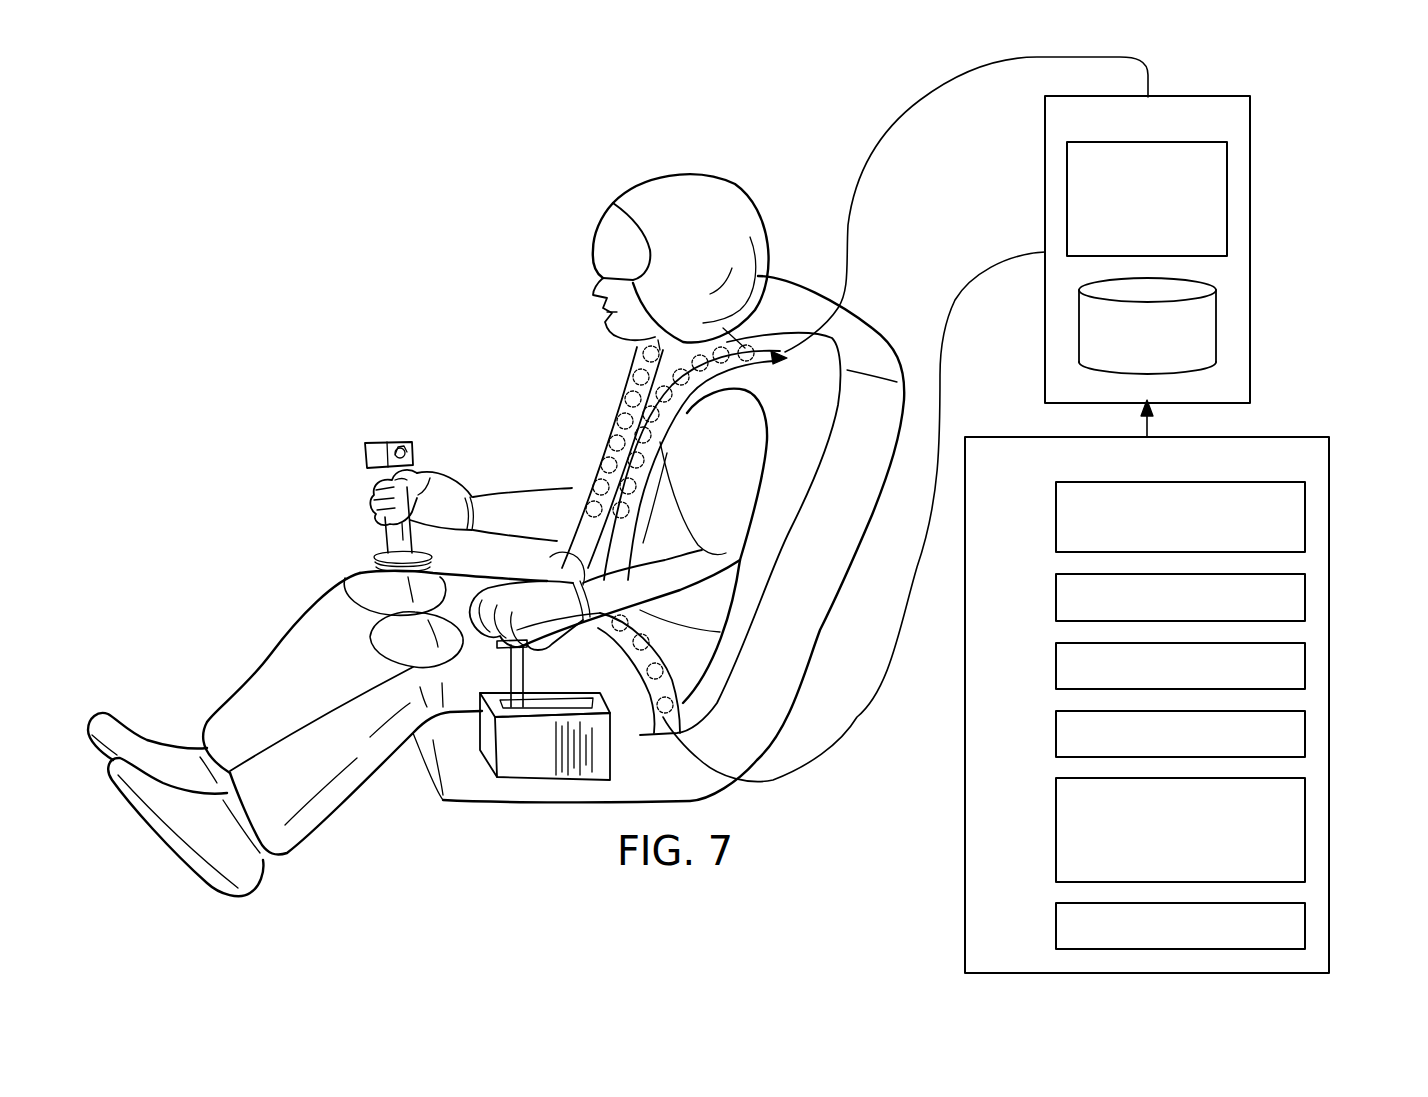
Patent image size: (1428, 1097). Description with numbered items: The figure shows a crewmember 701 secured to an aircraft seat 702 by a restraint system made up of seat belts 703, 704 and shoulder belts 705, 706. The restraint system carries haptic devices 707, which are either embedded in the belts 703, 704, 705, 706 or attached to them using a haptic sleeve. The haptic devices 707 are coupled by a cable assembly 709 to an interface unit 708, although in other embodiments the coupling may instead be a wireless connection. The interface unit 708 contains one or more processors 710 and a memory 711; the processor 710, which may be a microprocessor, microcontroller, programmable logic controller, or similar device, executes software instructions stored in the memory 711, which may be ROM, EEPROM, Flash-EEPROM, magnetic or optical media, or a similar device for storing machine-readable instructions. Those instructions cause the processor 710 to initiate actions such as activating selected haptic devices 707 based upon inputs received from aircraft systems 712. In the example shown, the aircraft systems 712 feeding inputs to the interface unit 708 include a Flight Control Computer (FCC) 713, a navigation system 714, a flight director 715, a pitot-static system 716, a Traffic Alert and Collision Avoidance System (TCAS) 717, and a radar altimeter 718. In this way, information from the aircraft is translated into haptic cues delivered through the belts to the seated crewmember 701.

The crewmember 701 is at (357, 573).
The aircraft seat 702 is at (867, 337).
The seat belt 703 is at (641, 737).
The seat belt 704 is at (552, 557).
The shoulder belt 705 is at (674, 408).
The shoulder belt 706 is at (600, 447).
The haptic devices 707 is at (610, 410).
The interface unit 708 is at (1193, 249).
The cable assembly 709 is at (940, 83).
The processor 710 is at (1170, 233).
The memory 711 is at (1170, 346).
The aircraft systems 712 is at (1193, 686).
The Flight Control Computer (FCC) 713 is at (1056, 516).
The navigation system 714 is at (1056, 598).
The flight director 715 is at (1056, 666).
The pitot-static system 716 is at (1056, 733).
The Traffic Alert and Collision Avoidance System (TCAS) 717 is at (1056, 829).
The radar altimeter 718 is at (1056, 925).